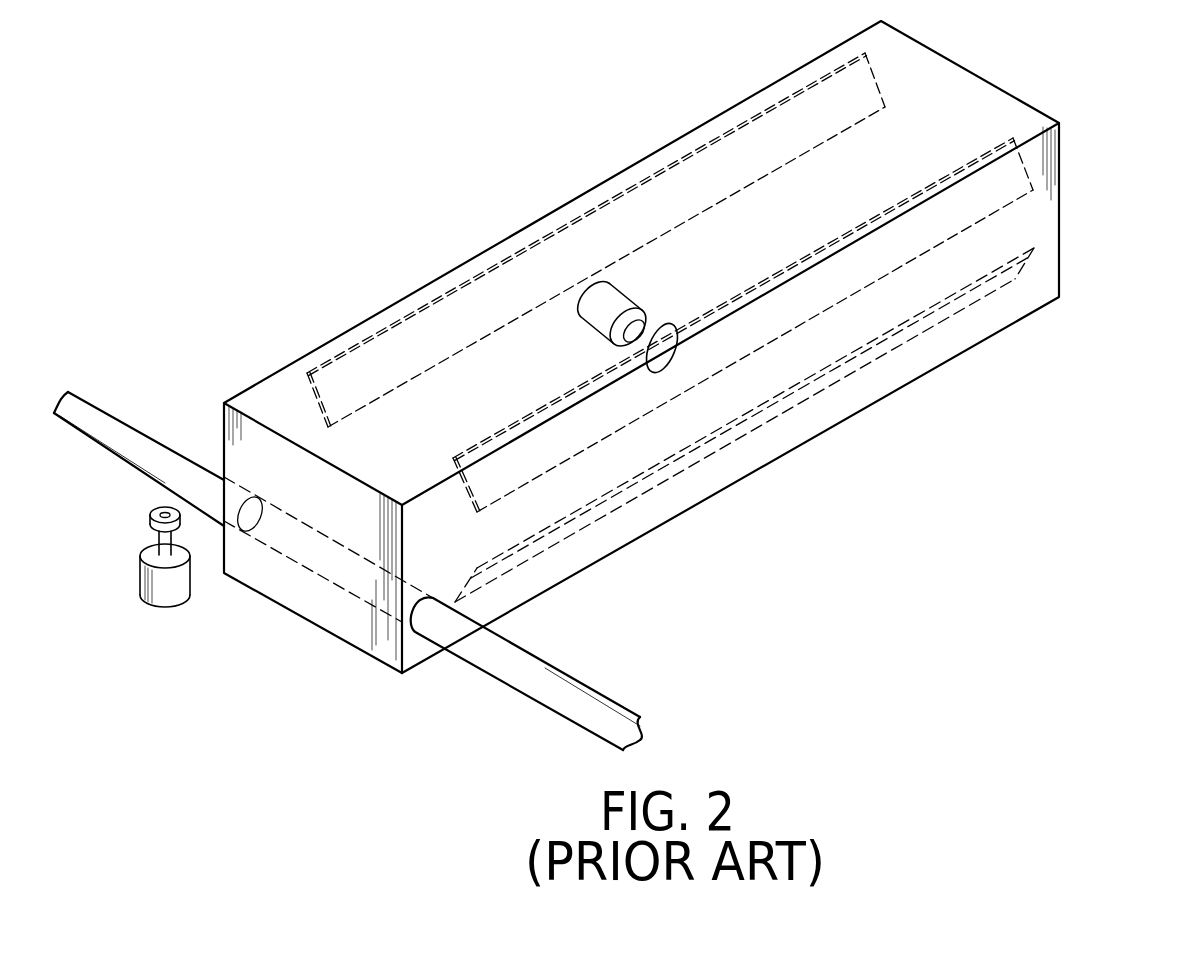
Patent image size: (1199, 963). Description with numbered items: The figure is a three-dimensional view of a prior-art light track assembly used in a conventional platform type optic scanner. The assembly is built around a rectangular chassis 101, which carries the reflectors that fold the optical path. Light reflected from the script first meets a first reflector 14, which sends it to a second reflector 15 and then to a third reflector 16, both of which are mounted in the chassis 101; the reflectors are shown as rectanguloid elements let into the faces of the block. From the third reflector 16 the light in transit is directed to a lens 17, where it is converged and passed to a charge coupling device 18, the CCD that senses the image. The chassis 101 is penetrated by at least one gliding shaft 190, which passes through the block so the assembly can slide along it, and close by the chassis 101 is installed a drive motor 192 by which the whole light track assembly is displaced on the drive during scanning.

The chassis 101 is at (1059, 168).
The first reflector 14 is at (443, 320).
The second reflector 15 is at (1007, 197).
The third reflector 16 is at (993, 288).
The lens 17 is at (667, 322).
The Charge Coupling Device (CCD) 18 is at (600, 307).
The gliding shaft 190 is at (567, 690).
The drive motor 192 is at (180, 590).